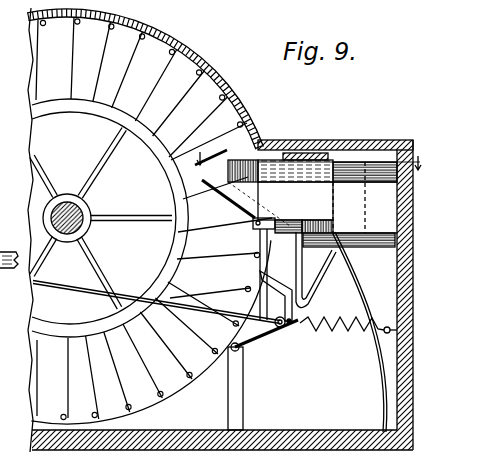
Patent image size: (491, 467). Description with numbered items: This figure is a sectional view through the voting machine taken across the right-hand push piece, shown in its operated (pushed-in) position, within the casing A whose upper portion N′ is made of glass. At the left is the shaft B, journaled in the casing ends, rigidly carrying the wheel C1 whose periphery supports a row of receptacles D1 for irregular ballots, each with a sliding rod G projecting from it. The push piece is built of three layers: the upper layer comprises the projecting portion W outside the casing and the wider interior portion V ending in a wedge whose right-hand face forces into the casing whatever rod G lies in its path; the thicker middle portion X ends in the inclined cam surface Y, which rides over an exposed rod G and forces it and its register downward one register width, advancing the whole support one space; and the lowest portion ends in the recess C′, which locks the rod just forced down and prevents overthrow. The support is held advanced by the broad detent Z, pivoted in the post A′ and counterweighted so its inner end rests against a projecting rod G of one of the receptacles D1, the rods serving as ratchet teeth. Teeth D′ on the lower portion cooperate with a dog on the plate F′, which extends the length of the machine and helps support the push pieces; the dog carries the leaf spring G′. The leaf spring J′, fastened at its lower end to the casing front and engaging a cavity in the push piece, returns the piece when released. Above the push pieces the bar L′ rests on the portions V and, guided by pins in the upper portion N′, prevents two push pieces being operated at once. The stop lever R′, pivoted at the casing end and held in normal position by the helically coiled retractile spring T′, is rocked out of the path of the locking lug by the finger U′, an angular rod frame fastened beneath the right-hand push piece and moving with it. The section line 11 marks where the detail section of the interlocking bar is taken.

The shaft B is at (85, 211).
The wheel C1 is at (110, 150).
The receptacles for irregular ballots D1 is at (148, 218).
The sliding rod G is at (238, 117).
The leaf spring G′ is at (255, 258).
The section line 11— 11 is at (309, 161).
The upper portion of the casing N′ is at (363, 142).
The casing A is at (395, 266).
The bar L′ is at (293, 153).
The interior wider portion of the push piece V is at (295, 171).
The projecting portion of the push piece W is at (383, 177).
The middle portion of the push piece X is at (333, 197).
The teeth D′ is at (312, 225).
The plate F′ is at (333, 228).
The inclined cam surface Y is at (225, 198).
The recess C′ is at (253, 220).
The stop lever R′ is at (272, 278).
The finger U′ is at (310, 272).
The leaf spring J′ is at (363, 292).
The helically coiled retractile spring T′ is at (348, 339).
The detent Z is at (260, 340).
The post A′ is at (243, 383).